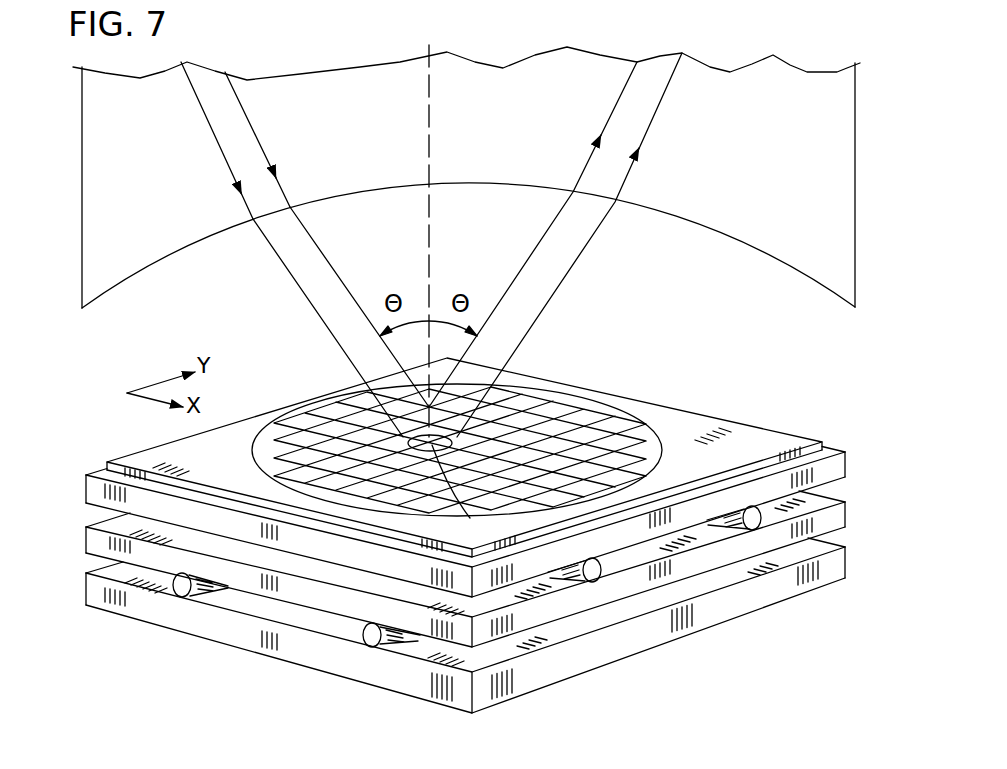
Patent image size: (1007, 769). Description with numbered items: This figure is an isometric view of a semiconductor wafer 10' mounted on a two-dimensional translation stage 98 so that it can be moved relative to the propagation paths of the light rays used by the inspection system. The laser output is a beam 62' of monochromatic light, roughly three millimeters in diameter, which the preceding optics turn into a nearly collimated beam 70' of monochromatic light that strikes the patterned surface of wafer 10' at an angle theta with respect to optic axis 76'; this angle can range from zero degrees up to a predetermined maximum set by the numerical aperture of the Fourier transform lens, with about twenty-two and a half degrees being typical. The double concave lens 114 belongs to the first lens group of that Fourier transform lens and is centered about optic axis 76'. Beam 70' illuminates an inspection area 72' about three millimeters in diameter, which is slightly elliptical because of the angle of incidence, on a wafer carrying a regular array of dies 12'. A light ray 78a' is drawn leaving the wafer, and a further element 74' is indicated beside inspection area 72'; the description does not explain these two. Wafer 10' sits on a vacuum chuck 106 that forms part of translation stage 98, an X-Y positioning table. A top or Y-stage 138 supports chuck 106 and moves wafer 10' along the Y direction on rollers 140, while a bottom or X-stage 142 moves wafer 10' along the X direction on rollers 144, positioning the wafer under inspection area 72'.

The beam of monochromatic light 62' is at (218, 140).
The nearly collimated beam of monochromatic light 70' is at (328, 322).
The optic axis 76' is at (471, 241).
The specularly reflected beam 78a' is at (555, 245).
The double concave lens 114 is at (836, 249).
The semiconductor wafer 10' is at (459, 430).
The die 12' is at (460, 429).
The inspection area 72' is at (326, 455).
The scan path 74' is at (461, 495).
The vacuum chuck 106 is at (727, 433).
The Y-stage 138 is at (83, 487).
The X-stage 142 is at (87, 541).
The two-dimensional translation stage 98 is at (158, 652).
The rollers 140 is at (752, 524).
The rollers 144 is at (372, 637).